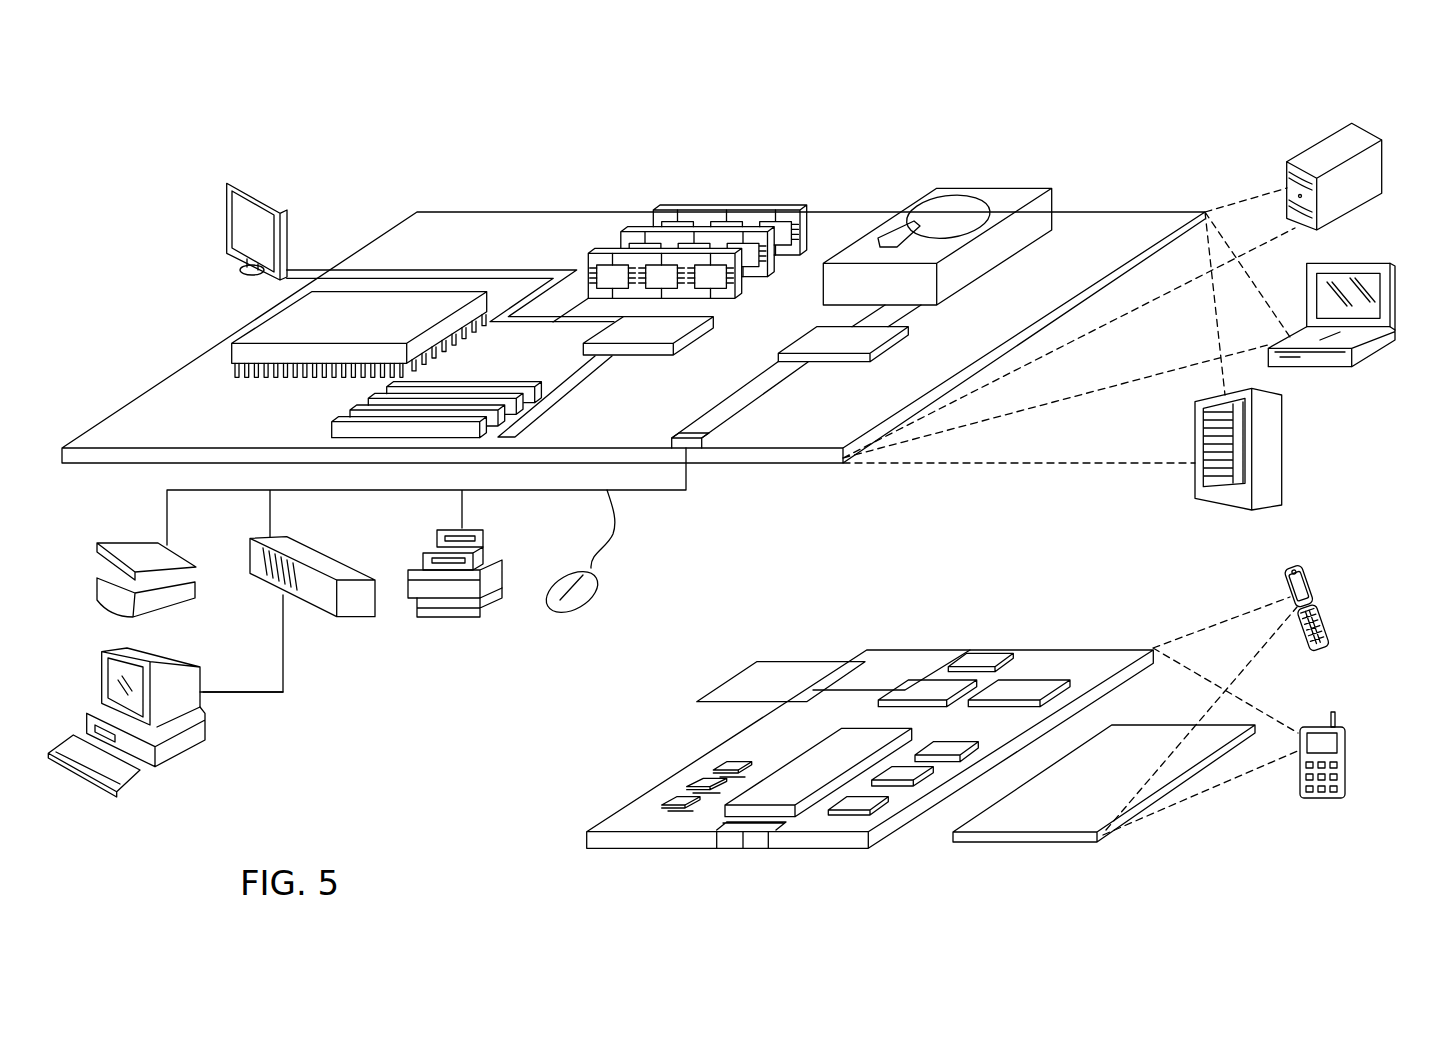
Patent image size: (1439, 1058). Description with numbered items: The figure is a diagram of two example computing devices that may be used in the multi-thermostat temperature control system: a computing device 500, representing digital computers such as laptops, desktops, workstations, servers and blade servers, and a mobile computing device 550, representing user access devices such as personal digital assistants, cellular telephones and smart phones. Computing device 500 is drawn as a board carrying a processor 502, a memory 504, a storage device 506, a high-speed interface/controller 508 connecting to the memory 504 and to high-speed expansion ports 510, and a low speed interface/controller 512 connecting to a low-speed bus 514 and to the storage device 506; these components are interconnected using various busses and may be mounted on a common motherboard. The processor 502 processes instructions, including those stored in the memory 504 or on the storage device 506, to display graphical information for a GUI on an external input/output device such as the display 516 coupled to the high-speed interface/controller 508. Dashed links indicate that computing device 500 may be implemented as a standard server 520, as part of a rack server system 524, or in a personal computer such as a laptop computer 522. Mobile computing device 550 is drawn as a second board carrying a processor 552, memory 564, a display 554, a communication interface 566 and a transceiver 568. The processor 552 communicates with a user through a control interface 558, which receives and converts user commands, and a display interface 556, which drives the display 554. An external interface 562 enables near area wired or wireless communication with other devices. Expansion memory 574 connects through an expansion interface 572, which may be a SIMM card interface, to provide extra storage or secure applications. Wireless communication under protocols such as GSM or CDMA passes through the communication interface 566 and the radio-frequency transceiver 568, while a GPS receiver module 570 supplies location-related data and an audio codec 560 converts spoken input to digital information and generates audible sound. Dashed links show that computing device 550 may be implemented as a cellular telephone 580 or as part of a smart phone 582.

The computing device 500 is at (361, 156).
The processor 502 is at (253, 328).
The memory 504 is at (727, 207).
The storage device 506 is at (982, 188).
The high-speed interface/controller 508 is at (668, 330).
The high-speed expansion ports 510 is at (358, 415).
The low speed interface/controller 512 is at (815, 335).
The low-speed bus 514 is at (690, 430).
The display 516 is at (232, 182).
The standard server 520 is at (1305, 158).
The laptop computer 522 is at (1368, 263).
The rack server system 524 is at (1282, 450).
The mobile computing device 550 is at (534, 845).
The processor 552 is at (803, 765).
The display 554 is at (1148, 740).
The display interface 556 is at (870, 803).
The control interface 558 is at (910, 773).
The audio codec 560 is at (943, 743).
The external interface 562 is at (743, 835).
The memory 564 is at (693, 783).
The communication interface 566 is at (927, 687).
The transceiver 568 is at (1028, 685).
The GPS receiver module 570 is at (983, 658).
The expansion interface 572 is at (845, 661).
The expansion memory 574 is at (755, 661).
The cellular telephone 580 is at (1303, 565).
The smart phone 582 is at (1310, 727).